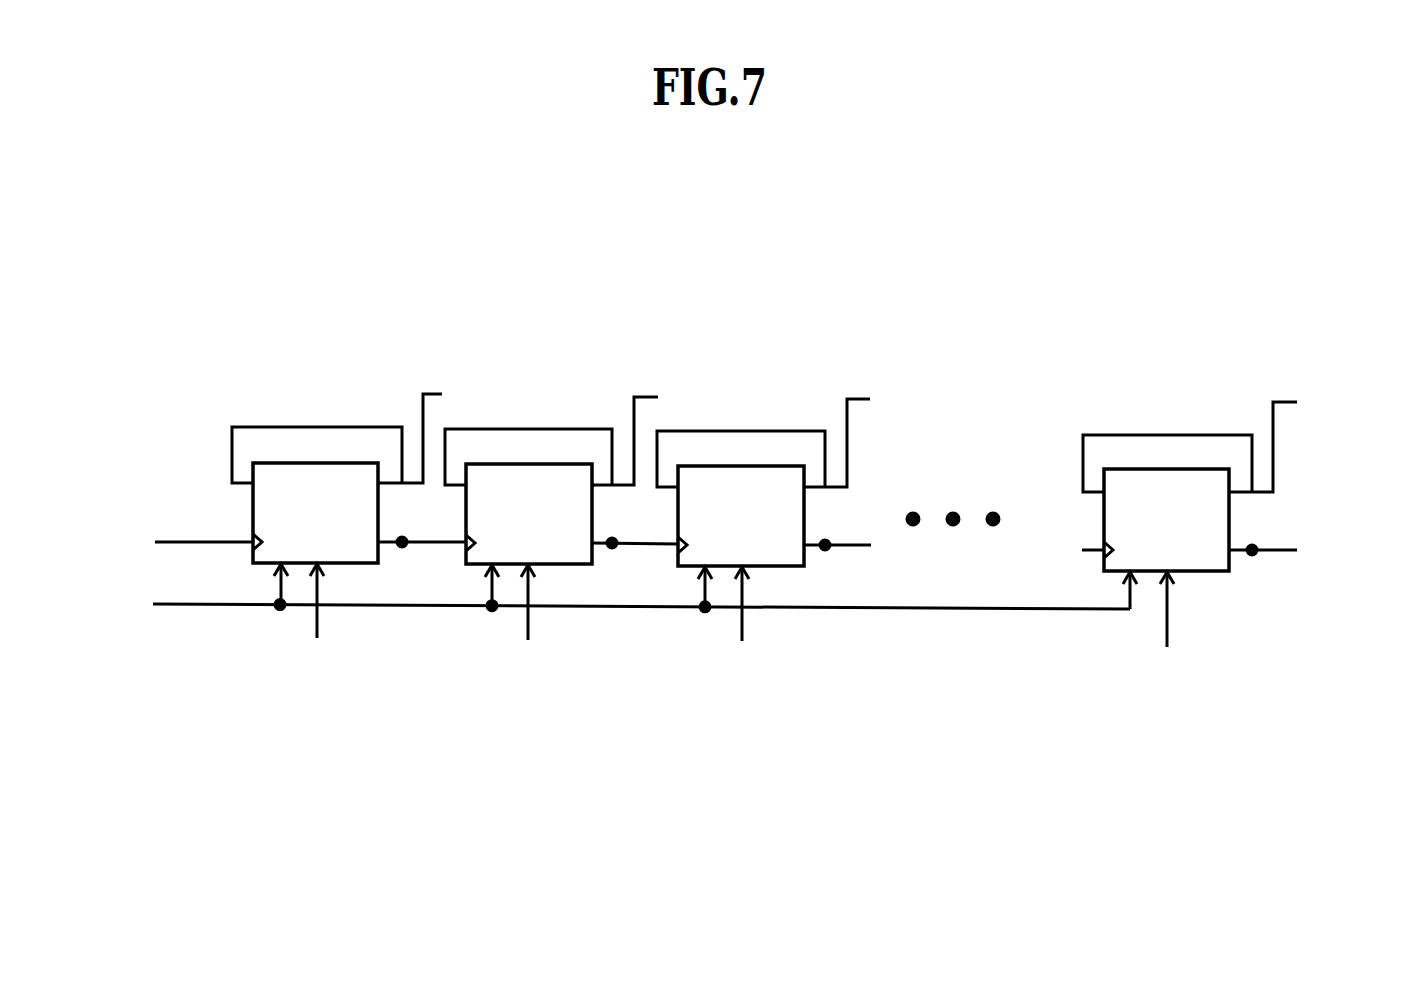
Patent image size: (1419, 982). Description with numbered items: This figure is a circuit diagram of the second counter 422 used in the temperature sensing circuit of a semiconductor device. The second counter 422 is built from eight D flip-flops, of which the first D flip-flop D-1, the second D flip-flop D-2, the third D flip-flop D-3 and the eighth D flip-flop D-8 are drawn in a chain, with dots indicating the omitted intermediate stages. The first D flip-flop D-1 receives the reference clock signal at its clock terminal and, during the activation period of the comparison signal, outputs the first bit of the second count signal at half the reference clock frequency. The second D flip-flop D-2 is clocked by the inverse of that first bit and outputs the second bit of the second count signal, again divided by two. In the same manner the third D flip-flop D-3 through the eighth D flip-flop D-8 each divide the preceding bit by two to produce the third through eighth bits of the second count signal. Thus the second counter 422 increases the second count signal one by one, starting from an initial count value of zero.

The second counter 422 is at (1197, 313).
The first D flip-flop D-1 is at (347, 529).
The second D flip-flop D-2 is at (600, 531).
The third D flip-flop D-3 is at (812, 533).
The eighth D flip-flop D-8 is at (1238, 536).